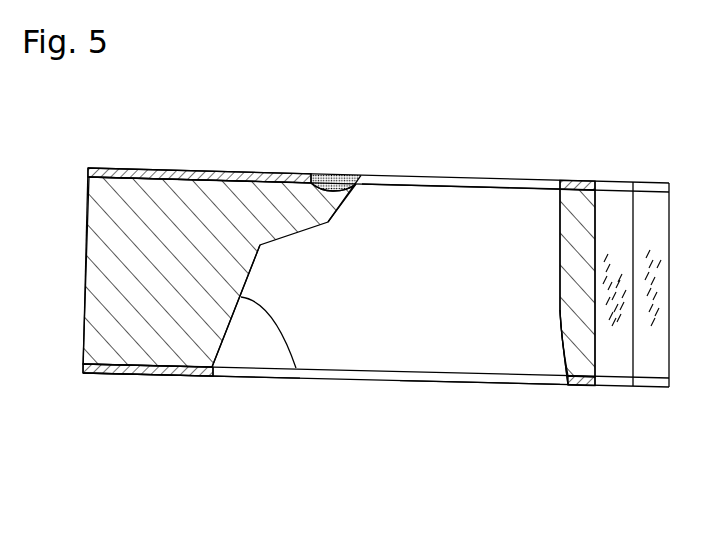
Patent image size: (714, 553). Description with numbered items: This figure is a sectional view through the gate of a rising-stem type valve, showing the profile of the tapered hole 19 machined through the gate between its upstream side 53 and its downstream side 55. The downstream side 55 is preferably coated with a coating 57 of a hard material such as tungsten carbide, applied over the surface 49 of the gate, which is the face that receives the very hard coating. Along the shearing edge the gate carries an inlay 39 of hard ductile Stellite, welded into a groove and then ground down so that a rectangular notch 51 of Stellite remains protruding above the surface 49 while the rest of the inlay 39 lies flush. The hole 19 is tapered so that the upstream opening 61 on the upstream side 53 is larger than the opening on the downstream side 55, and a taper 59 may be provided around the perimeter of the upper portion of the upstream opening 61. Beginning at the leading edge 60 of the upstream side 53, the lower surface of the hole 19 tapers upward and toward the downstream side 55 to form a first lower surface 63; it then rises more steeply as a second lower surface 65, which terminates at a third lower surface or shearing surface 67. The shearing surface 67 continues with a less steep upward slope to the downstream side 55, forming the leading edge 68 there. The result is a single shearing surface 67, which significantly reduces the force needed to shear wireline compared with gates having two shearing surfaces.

The hole 19 is at (436, 348).
The inlay 39 is at (350, 177).
The surface 49 is at (240, 175).
The rectangular notch 51 is at (327, 283).
The upstream side 53 is at (220, 395).
The downstream side 55 is at (293, 120).
The coating 57 is at (140, 170).
The taper 59 is at (563, 350).
The leading edge 60 is at (222, 378).
The upstream opening 61 is at (468, 432).
The first lower surface 63 is at (296, 368).
The second lower surface 65 is at (328, 222).
The shearing surface 67 is at (340, 212).
The leading edge 68 is at (372, 184).